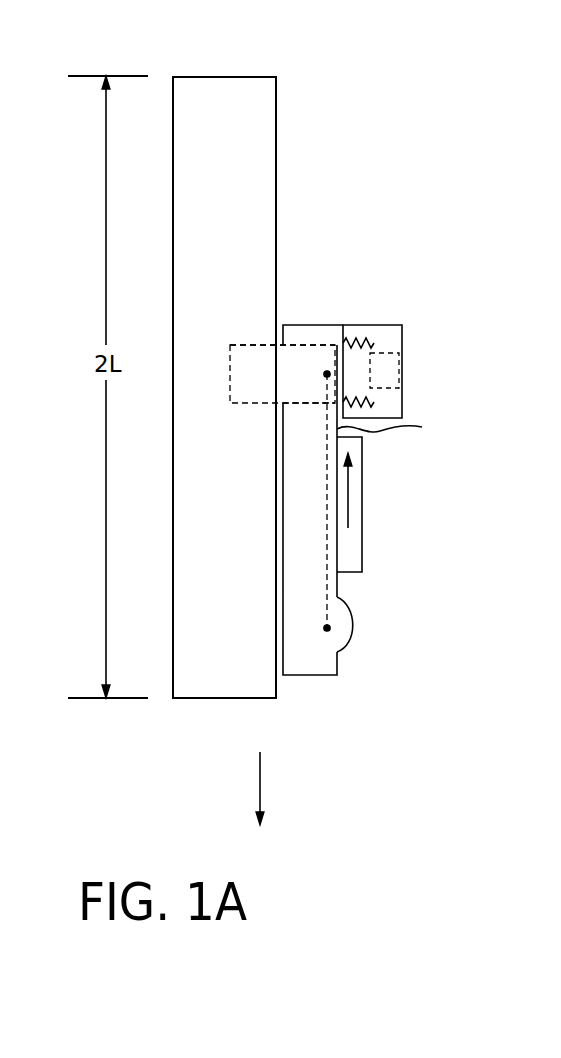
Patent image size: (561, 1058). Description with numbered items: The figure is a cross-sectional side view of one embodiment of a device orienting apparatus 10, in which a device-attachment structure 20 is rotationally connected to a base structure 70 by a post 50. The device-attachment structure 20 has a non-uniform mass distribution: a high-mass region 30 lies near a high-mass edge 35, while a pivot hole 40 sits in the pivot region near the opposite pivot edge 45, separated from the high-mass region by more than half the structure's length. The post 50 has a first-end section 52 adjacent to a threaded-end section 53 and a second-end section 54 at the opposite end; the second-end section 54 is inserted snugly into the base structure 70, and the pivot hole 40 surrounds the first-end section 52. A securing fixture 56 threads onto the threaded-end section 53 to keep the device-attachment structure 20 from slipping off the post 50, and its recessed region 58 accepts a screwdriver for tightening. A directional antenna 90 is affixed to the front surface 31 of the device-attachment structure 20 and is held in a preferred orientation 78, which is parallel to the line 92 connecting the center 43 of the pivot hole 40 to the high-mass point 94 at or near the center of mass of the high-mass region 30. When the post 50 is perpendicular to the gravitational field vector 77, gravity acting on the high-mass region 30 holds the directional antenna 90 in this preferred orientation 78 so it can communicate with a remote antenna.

The device orienting apparatus 10 is at (206, 808).
The device-attachment structure 20 is at (305, 663).
The high-mass region 30 is at (357, 620).
The front surface 31 is at (397, 422).
The high-mass edge 35 is at (326, 684).
The pivot hole 40 is at (289, 408).
The center of the pivot hole 43 is at (322, 373).
The pivot edge 45 is at (295, 322).
The post 50 is at (224, 369).
The first-end section 52 is at (317, 420).
The threaded-end section 53 is at (362, 320).
The second-end section 54 is at (256, 340).
The securing fixture 56 is at (385, 325).
The recessed region 58 is at (399, 372).
The base structure 70 is at (243, 77).
The gravitational field vector 77 is at (262, 788).
The preferred orientation 78 is at (348, 500).
The directional antenna 90 is at (362, 550).
The line 92 is at (325, 500).
The high-mass point 94 is at (319, 622).